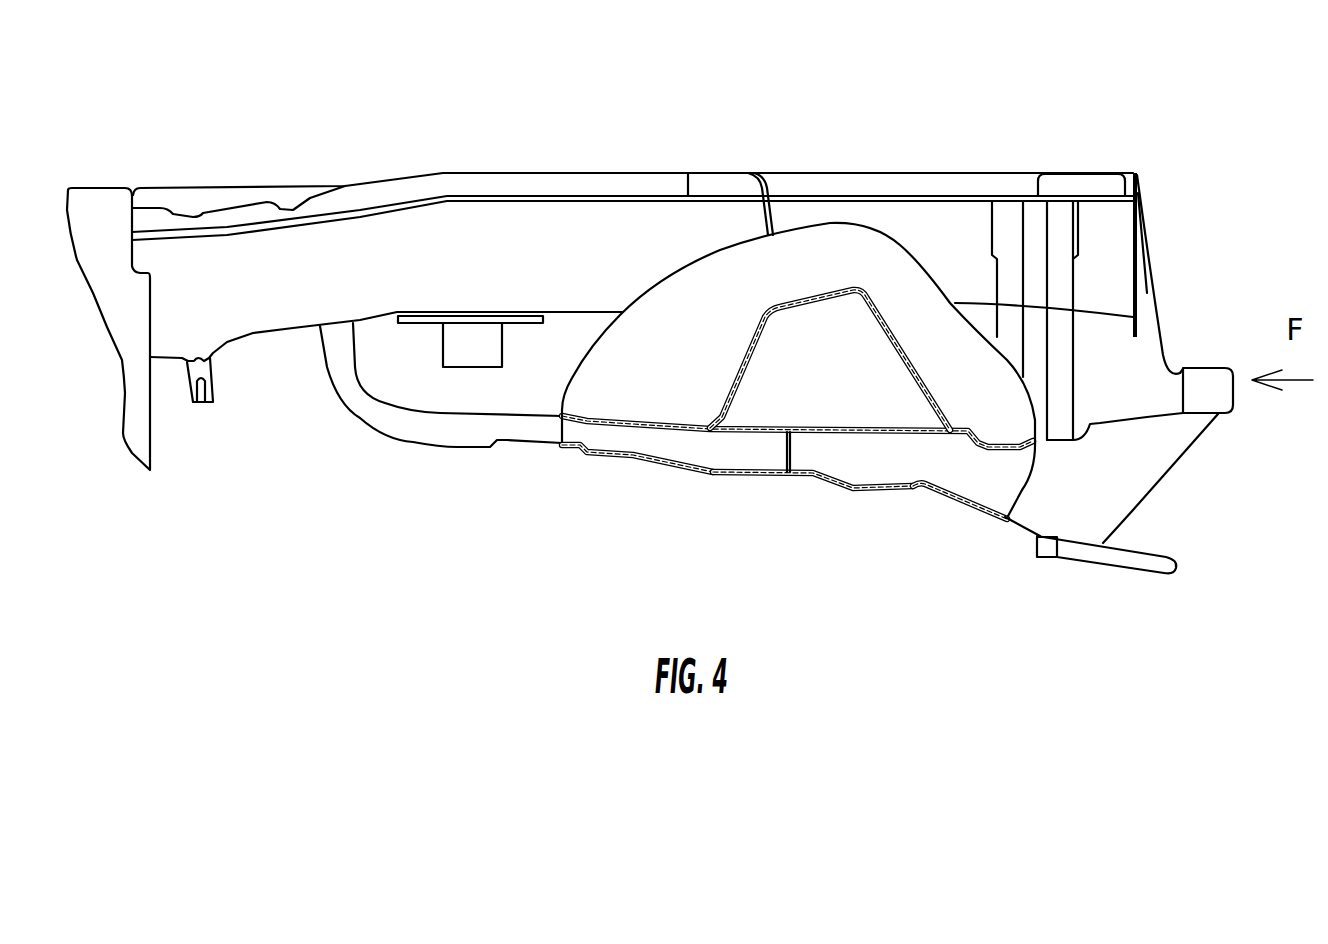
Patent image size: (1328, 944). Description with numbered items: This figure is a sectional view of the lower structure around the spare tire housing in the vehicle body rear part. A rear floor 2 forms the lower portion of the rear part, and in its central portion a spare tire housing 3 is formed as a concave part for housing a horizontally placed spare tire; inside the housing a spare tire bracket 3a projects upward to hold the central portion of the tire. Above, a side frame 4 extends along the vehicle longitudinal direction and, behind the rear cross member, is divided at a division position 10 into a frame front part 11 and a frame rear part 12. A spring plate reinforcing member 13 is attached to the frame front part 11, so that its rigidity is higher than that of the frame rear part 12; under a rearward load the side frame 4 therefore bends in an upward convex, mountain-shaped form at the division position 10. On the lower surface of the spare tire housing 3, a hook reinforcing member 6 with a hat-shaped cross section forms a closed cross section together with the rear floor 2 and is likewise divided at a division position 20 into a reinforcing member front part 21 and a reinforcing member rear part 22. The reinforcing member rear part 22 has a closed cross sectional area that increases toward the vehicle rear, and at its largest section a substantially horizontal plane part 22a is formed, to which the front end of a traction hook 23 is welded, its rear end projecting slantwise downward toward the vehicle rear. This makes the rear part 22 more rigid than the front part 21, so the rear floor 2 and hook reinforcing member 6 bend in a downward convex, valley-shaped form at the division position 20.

The rear floor 2 is at (1078, 128).
The spare tire housing 3 is at (1100, 316).
The spare tire bracket 3a is at (883, 322).
The side frame 4 is at (868, 195).
The hook reinforcing member 6 is at (747, 472).
The division position 10 is at (777, 218).
The frame front part 11 is at (583, 217).
The frame rear part 12 is at (977, 213).
The spring plate reinforcing member 13 is at (465, 353).
The division position 20 is at (793, 450).
The reinforcing member front part 21 is at (628, 445).
The reinforcing member rear part 22 is at (952, 500).
The substantially horizontal plane part 22a is at (1055, 558).
The traction hook 23 is at (1123, 553).